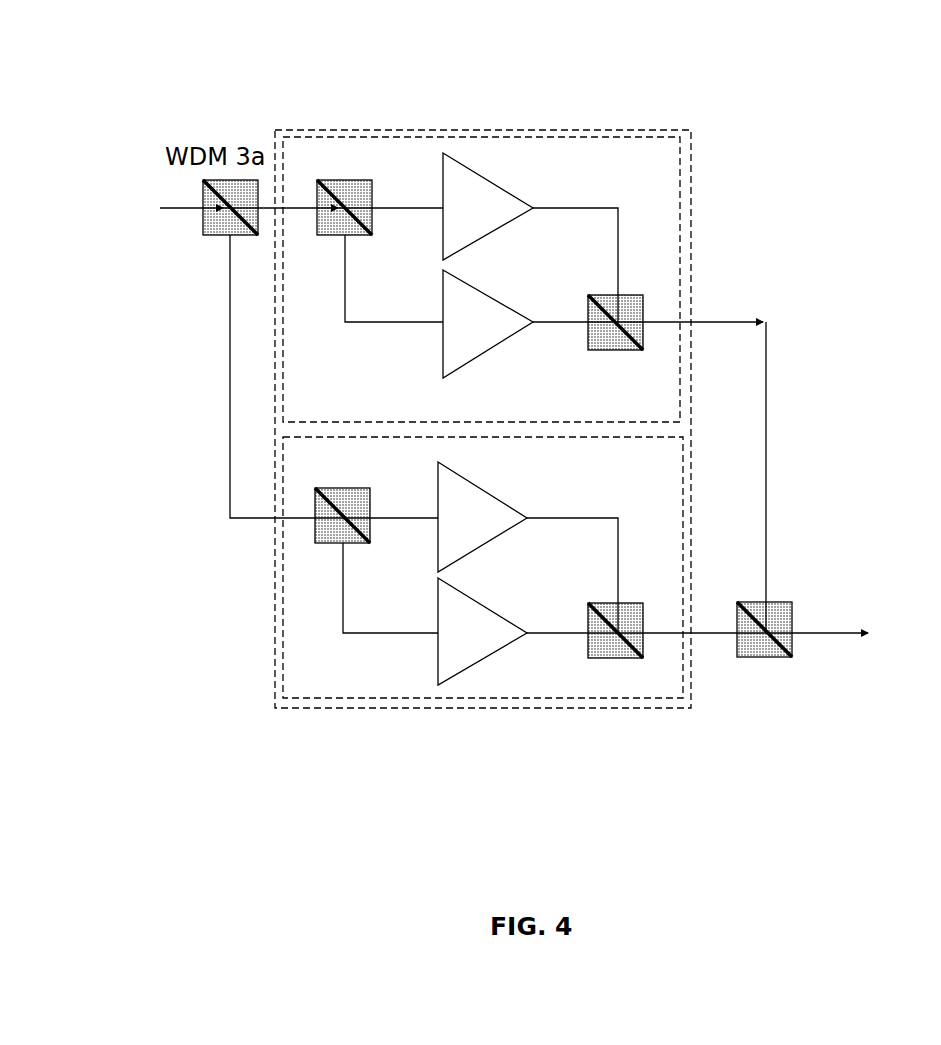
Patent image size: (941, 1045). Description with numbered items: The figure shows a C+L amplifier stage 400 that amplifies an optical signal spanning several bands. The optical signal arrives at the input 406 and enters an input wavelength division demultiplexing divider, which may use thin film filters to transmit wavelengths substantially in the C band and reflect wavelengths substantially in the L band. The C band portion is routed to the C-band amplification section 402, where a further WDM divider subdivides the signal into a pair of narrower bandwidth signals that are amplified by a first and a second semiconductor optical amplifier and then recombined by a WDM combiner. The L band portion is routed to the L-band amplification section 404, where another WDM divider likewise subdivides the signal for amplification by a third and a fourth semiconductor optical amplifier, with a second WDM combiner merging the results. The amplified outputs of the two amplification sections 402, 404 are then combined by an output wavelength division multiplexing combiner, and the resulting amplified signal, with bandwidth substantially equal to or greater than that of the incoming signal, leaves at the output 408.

The C+L amplifier stage 400 is at (692, 78).
The C-band amplification section 402 is at (498, 404).
The L-band amplification section 404 is at (500, 469).
The input (C + L) 406 is at (170, 207).
The output (C + L) 408 is at (838, 635).